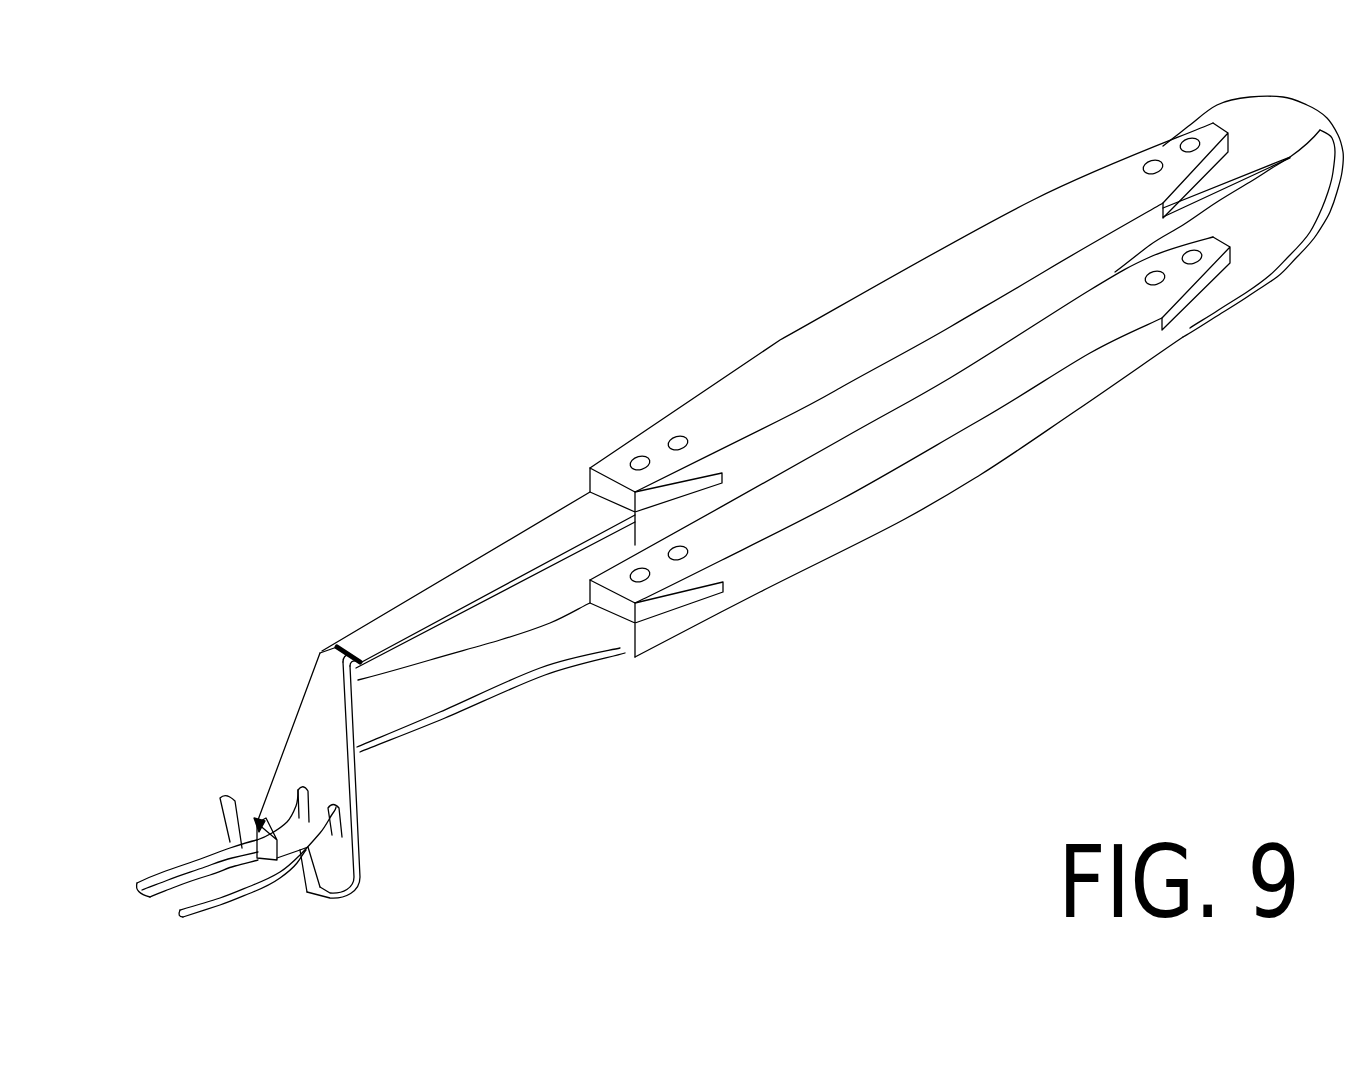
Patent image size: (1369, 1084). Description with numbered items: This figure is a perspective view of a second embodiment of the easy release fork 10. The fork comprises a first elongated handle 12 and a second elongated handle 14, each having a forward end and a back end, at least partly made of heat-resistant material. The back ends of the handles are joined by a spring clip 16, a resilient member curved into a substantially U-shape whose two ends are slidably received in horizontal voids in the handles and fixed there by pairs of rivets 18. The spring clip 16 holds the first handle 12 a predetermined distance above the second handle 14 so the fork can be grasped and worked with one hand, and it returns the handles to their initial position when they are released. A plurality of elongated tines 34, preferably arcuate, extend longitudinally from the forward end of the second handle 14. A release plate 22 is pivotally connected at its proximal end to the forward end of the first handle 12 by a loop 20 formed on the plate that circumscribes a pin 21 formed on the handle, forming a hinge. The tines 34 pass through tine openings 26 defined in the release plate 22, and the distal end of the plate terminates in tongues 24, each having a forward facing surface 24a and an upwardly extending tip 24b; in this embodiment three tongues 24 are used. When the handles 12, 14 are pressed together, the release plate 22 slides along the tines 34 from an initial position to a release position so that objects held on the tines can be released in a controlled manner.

The easy release fork 10 is at (400, 262).
The first elongated handle 12 is at (880, 302).
The second elongated handle 14 is at (893, 490).
The spring clip 16 is at (1283, 233).
The rivets 18 is at (1190, 143).
The loop 20 is at (320, 652).
The pin 21 is at (362, 680).
The release plate 22 is at (325, 745).
The tongue 24 is at (258, 818).
The forward facing surface 24a is at (227, 828).
The upwardly extending tip 24b is at (347, 872).
The tine openings 26 is at (300, 787).
The tines 34 is at (140, 886).